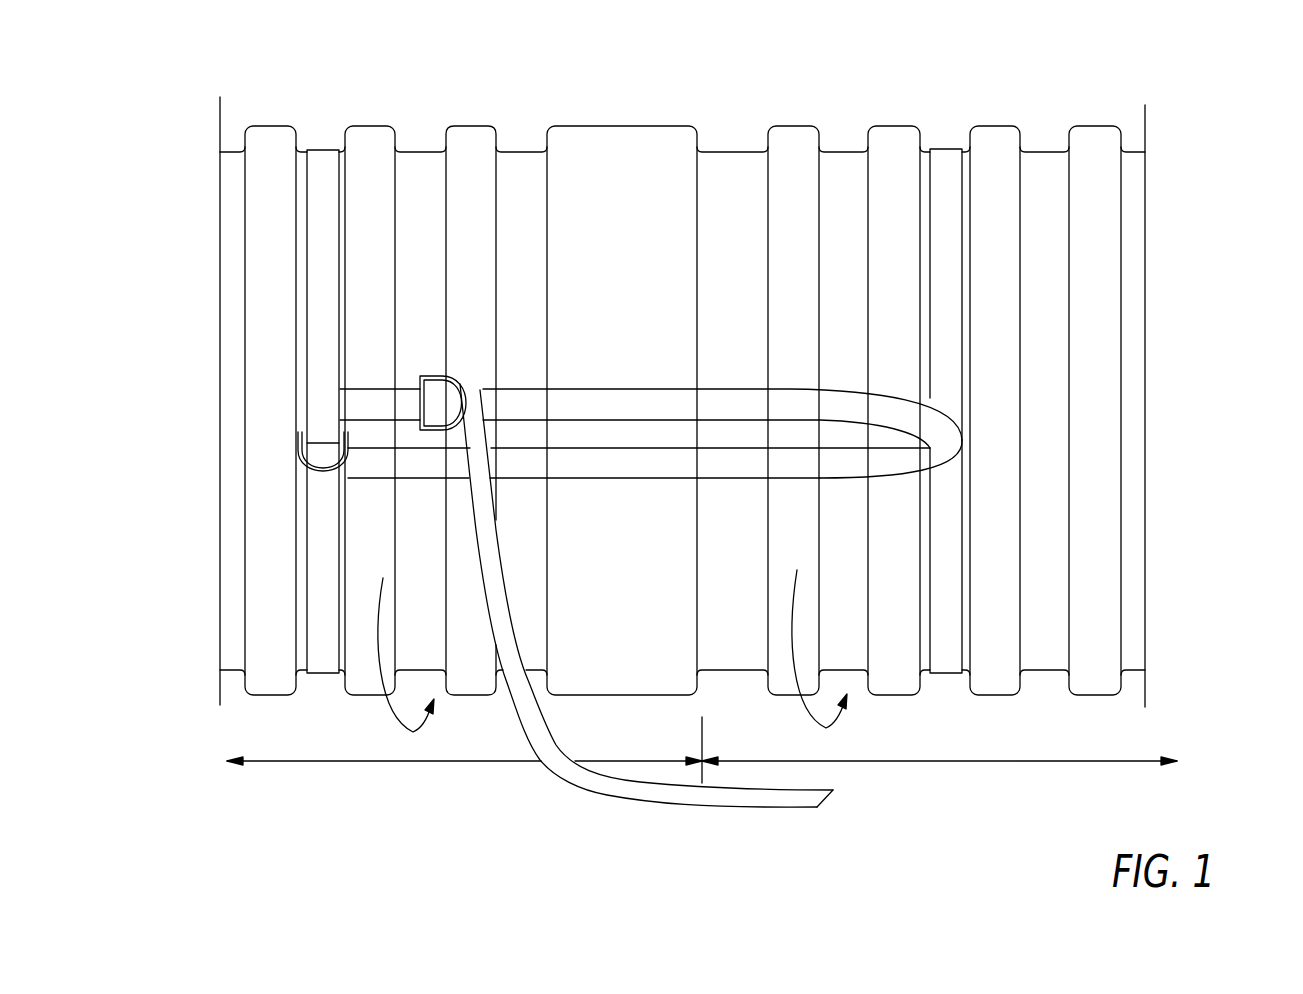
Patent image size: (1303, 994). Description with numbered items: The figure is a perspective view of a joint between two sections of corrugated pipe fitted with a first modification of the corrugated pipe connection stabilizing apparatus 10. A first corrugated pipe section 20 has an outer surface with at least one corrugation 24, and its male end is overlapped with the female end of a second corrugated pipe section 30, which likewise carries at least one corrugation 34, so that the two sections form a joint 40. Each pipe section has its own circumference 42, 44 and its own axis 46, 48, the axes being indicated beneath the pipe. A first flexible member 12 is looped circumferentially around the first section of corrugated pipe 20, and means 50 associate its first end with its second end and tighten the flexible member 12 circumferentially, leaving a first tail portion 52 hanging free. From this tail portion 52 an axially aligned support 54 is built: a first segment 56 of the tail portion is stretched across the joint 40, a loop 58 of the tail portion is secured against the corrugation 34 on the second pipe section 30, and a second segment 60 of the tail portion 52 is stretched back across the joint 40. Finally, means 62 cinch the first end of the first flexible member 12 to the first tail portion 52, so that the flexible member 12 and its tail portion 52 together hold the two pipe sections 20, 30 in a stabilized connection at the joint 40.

The corrugated pipe connection stabilizing apparatus 10 is at (1108, 90).
The first flexible member 12 is at (318, 148).
The first corrugated pipe section 20 is at (472, 157).
The corrugation 24 is at (378, 127).
The second corrugated pipe section 30 is at (993, 155).
The corrugation 34 is at (900, 124).
The joint 40 is at (635, 125).
The circumference 42 is at (417, 663).
The circumference 44 is at (830, 655).
The axis 46 is at (447, 763).
The axis 48 is at (950, 764).
The means for associating and tightening 50 is at (298, 468).
The first tail portion 52 is at (630, 797).
The axially aligned support 54 is at (537, 476).
The first segment 56 is at (859, 468).
The loop 58 is at (962, 322).
The second segment 60 is at (793, 392).
The means for cinching 62 is at (456, 378).